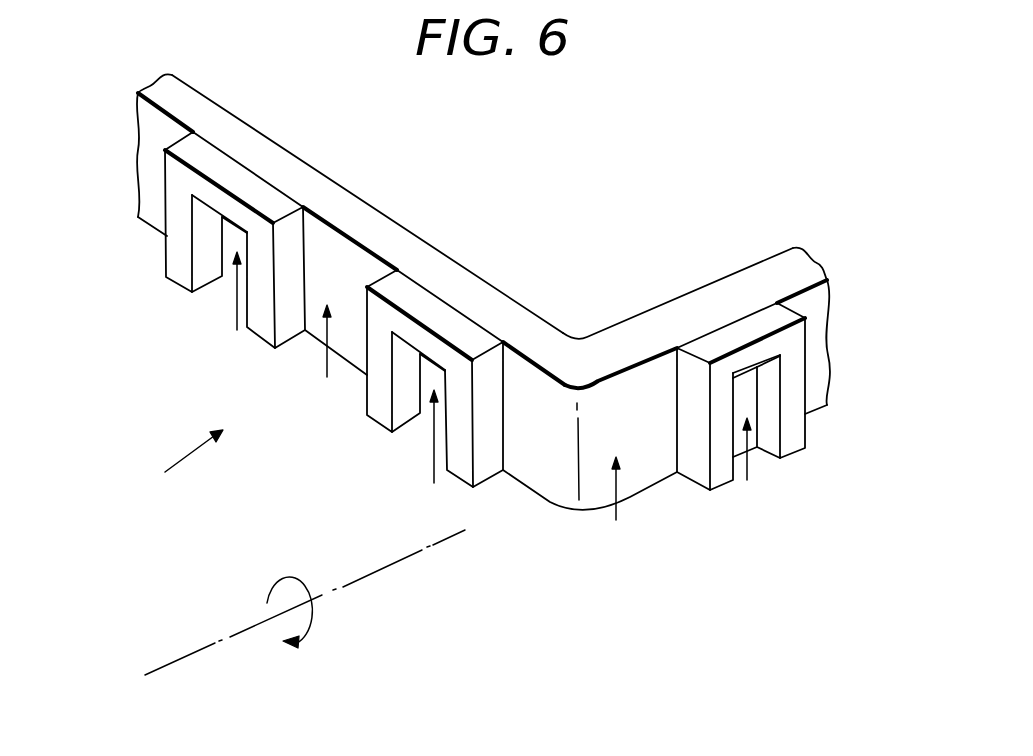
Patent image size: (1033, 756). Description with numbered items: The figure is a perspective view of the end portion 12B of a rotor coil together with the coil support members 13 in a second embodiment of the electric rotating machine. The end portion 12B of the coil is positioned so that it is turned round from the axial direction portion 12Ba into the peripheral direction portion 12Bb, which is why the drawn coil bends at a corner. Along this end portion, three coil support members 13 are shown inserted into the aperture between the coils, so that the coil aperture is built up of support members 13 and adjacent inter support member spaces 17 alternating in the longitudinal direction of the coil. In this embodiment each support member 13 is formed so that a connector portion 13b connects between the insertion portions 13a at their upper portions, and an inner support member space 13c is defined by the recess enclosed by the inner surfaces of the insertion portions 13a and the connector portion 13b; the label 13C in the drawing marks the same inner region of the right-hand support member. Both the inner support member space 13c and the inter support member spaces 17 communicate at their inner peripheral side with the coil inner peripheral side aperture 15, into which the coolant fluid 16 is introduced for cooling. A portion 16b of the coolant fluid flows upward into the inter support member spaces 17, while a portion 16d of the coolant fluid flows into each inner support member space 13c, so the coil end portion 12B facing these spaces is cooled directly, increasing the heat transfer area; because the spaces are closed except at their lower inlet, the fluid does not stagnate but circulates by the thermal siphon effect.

The end portion of the rotor coil 12B is at (483, 304).
The axial direction portion 12Ba is at (692, 305).
The peripheral direction portion 12Bb is at (307, 187).
The coil support member 13 is at (486, 311).
The insertion portion 13a is at (173, 243).
The connector portion 13b is at (236, 228).
The inner support member space 13c is at (223, 280).
The clip inner edge 13C is at (775, 367).
The coil inner peripheral side aperture 15 is at (262, 440).
The coolant fluid 16 is at (179, 459).
The portion of the coolant fluid 16b is at (617, 507).
The portion of the coolant fluid 16d is at (488, 381).
The inter support member space 17 is at (313, 332).